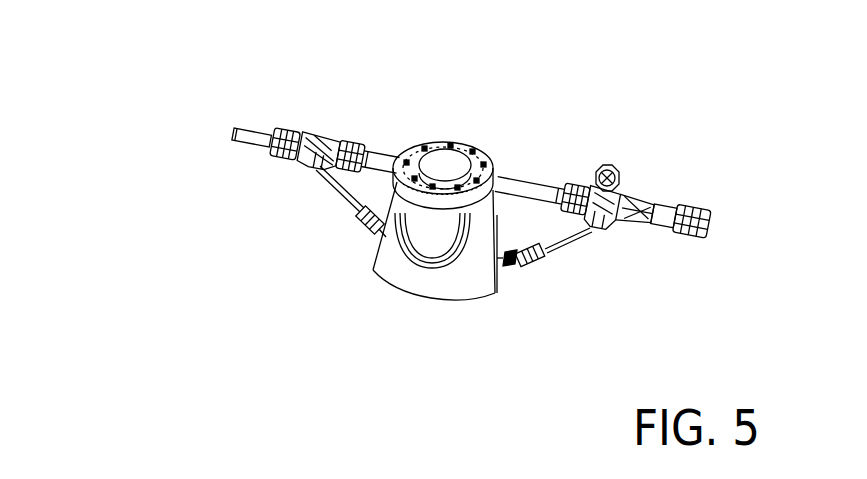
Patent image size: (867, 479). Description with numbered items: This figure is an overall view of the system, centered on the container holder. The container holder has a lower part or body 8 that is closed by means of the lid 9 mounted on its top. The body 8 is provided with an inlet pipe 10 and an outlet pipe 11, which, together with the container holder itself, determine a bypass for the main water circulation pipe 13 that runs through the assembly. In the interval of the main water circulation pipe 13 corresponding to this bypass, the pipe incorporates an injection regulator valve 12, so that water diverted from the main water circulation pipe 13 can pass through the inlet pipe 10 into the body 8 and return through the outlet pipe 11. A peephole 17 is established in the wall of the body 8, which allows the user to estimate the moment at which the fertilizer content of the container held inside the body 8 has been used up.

The body 8 is at (480, 248).
The lid 9 is at (433, 157).
The inlet pipe 10 is at (557, 247).
The outlet pipe 11 is at (340, 193).
The injection regulator valve 12 is at (609, 167).
The main water circulation pipe 13 is at (527, 185).
The peephole 17 is at (417, 267).